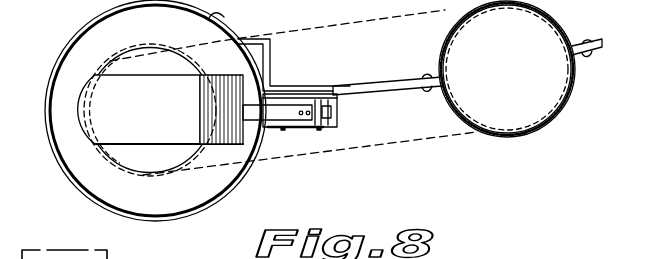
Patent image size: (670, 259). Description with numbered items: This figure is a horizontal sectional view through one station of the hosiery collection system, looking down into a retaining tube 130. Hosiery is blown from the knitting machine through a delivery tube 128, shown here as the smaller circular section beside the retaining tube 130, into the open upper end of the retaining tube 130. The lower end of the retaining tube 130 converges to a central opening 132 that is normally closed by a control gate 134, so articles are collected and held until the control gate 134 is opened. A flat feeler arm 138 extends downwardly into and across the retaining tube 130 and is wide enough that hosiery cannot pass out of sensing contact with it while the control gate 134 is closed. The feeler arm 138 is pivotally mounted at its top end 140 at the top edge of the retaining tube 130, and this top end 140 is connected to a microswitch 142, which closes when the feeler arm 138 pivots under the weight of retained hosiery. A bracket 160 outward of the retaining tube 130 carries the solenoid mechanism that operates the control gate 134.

The delivery tube 128 is at (563, 103).
The retaining tube 130 is at (62, 53).
The central opening 132 is at (112, 17).
The control gate 134 is at (160, 122).
The feeler arm 138 is at (158, 110).
The top end 140 is at (280, 108).
The microswitch 142 is at (337, 112).
The bracket 160 is at (318, 88).